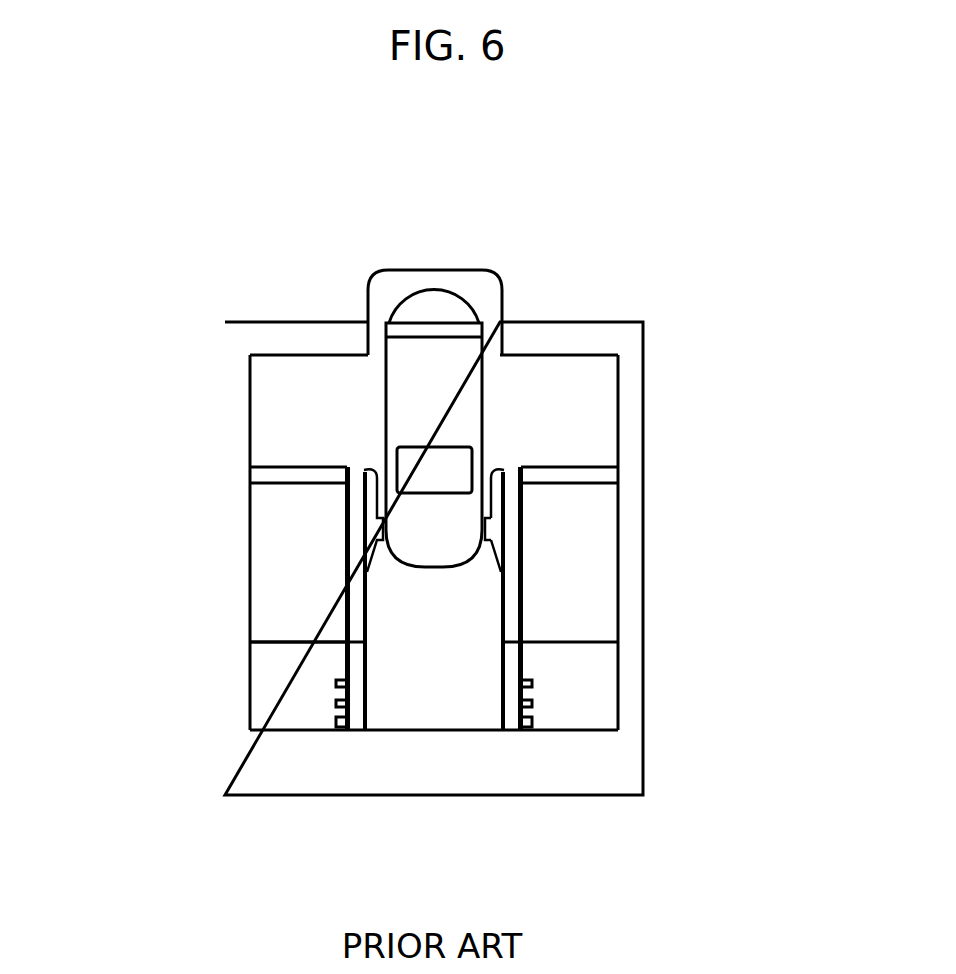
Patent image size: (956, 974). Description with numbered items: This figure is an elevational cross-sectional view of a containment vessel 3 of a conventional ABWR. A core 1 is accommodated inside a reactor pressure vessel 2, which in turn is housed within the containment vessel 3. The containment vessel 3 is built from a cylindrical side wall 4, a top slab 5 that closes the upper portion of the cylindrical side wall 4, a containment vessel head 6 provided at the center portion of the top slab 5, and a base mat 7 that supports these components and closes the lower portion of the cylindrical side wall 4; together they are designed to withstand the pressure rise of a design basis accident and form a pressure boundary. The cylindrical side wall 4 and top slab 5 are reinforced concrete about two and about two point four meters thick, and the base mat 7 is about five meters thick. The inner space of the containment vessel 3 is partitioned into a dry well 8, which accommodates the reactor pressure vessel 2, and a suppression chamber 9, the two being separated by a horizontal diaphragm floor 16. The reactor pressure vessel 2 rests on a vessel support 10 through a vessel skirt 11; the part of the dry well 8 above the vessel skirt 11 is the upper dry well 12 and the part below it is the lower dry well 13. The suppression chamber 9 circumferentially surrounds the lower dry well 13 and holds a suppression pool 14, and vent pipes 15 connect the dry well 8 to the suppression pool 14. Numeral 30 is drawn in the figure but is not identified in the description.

The core 1 is at (435, 463).
The reactor pressure vessel 2 is at (415, 430).
The containment vessel 3 is at (259, 270).
The cylindrical side wall 4 is at (241, 414).
The top slab 5 is at (292, 340).
The containment vessel head 6 is at (450, 268).
The base mat 7 is at (545, 790).
The dry well 8 is at (600, 390).
The suppression chamber 9 is at (575, 535).
The vessel support 10 is at (490, 537).
The vessel skirt 11 is at (370, 515).
The upper dry well 12 is at (587, 440).
The lower dry well 13 is at (420, 705).
The suppression pool 14 is at (585, 712).
The vent pipes 15 is at (355, 655).
The diaphragm floor 16 is at (300, 470).
The contact spring piece 30 is at (500, 570).